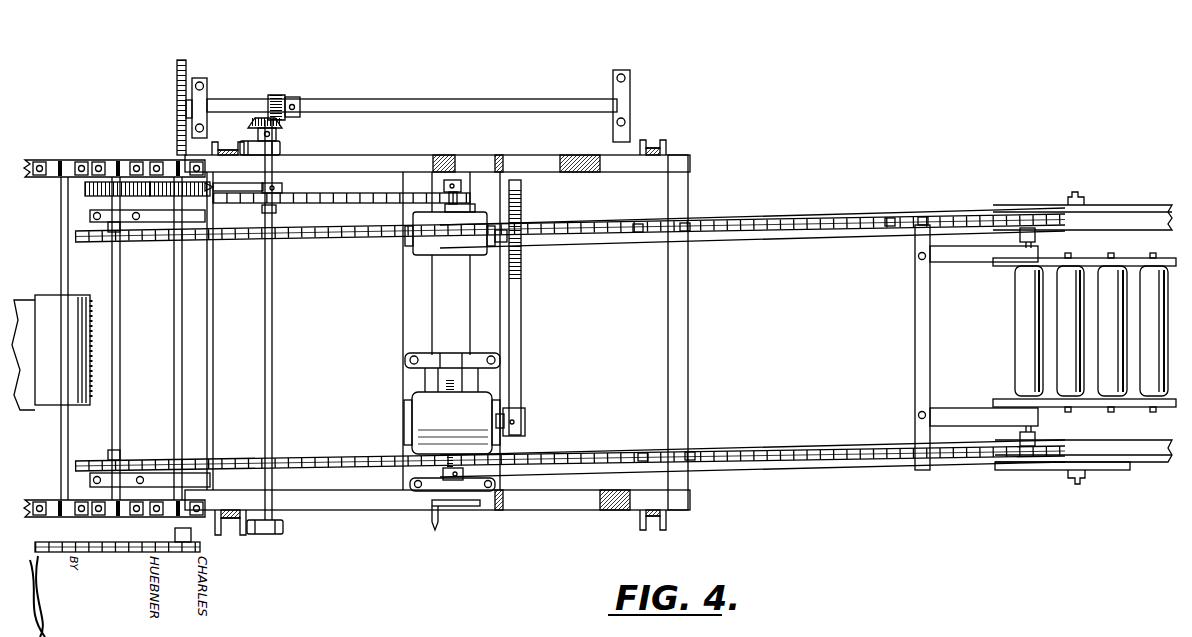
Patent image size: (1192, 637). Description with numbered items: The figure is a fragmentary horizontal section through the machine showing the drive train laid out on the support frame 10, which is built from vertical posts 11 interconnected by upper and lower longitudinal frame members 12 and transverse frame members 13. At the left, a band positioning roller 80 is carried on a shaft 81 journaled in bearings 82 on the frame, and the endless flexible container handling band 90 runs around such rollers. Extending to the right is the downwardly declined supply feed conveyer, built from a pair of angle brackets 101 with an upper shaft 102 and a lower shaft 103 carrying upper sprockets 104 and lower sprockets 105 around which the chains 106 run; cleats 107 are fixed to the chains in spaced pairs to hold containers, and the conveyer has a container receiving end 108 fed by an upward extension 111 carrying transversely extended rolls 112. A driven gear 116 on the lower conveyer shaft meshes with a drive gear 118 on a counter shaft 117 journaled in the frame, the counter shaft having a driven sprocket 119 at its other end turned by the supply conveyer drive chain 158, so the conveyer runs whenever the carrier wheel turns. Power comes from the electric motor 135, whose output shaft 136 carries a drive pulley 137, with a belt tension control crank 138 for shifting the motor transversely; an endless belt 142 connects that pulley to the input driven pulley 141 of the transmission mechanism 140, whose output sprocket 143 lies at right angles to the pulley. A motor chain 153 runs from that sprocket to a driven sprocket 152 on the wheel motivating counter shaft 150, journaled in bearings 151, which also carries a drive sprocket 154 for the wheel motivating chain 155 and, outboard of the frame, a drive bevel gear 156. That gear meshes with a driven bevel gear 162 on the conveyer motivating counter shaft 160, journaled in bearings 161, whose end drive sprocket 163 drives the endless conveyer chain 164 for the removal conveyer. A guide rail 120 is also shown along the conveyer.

The support frame 10 is at (694, 148).
The vertical posts 11 is at (228, 142).
The longitudinal frame members 12 is at (562, 160).
The transverse frame members 13 is at (678, 205).
The band positioning rollers 80 is at (50, 300).
The shafts 81 is at (70, 423).
The bearings 82 is at (54, 170).
The container handling band 90 is at (36, 403).
The angle brackets 101 is at (777, 222).
The upper shaft 102 is at (1037, 425).
The lower shaft 103 is at (120, 332).
The upper sprockets 104 is at (1040, 236).
The lower sprockets 105 is at (108, 228).
The chains 106 is at (790, 230).
The cleats 107 is at (685, 231).
The container receiving end 108 is at (958, 212).
The upward extension 111 is at (1120, 266).
The rolls 112 is at (1110, 313).
The driven gear 116 is at (108, 184).
The counter shaft 117 is at (183, 338).
The drive gear 118 is at (178, 184).
The driven sprocket 119 is at (193, 538).
The guide rails 120 is at (1076, 195).
The electric motor 135 is at (423, 396).
The output shaft 136 is at (502, 420).
The drive pulley 137 is at (527, 418).
The belt tension control crank 138 is at (436, 524).
The transmission mechanism 140 is at (422, 248).
The input driven pulley 141 is at (523, 256).
The endless belt 142 is at (523, 308).
The output sprocket 143 is at (456, 188).
The wheel motivating counter shaft 150 is at (271, 302).
The bearings 151 is at (283, 147).
The driven sprocket 152 is at (270, 206).
The motor chain 153 is at (367, 195).
The drive sprocket 154 is at (284, 191).
The wheel motivating chain 155 is at (221, 196).
The drive bevel gear 156 is at (278, 134).
The supply conveyer drive chain 158 is at (203, 542).
The conveyer motivating counter shaft 160 is at (405, 100).
The bearings 161 is at (204, 97).
The driven bevel gear 162 is at (281, 93).
The drive sprocket 163 is at (181, 62).
The endless conveyer chain 164 is at (180, 107).